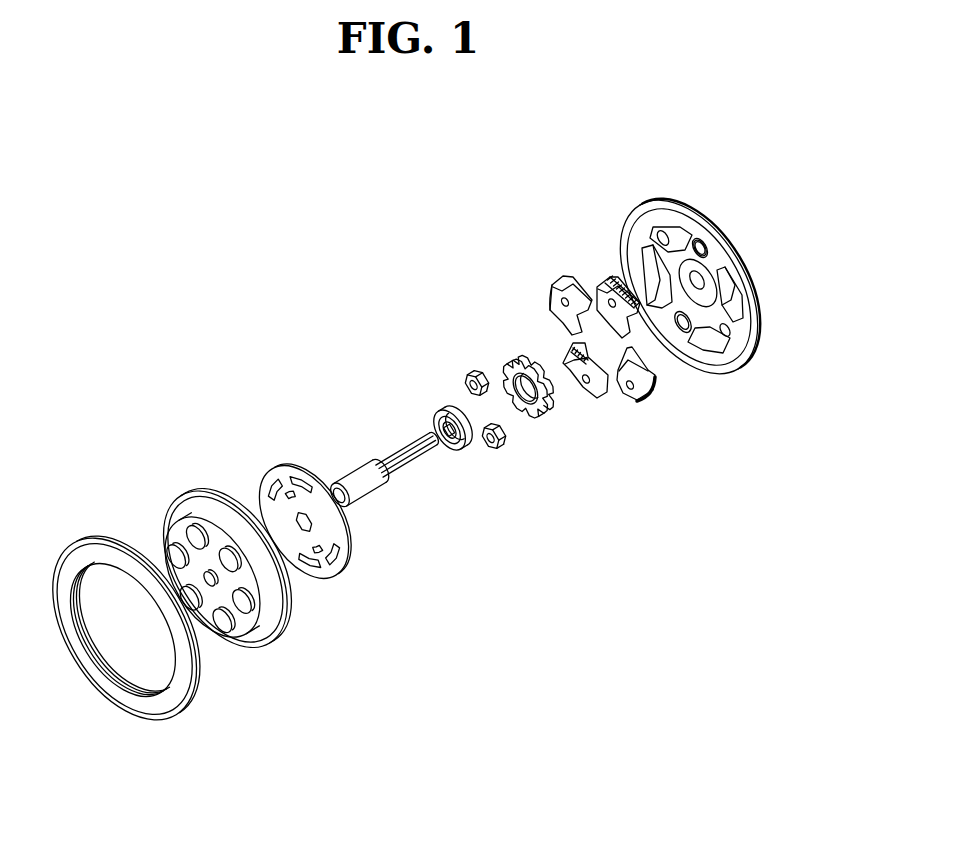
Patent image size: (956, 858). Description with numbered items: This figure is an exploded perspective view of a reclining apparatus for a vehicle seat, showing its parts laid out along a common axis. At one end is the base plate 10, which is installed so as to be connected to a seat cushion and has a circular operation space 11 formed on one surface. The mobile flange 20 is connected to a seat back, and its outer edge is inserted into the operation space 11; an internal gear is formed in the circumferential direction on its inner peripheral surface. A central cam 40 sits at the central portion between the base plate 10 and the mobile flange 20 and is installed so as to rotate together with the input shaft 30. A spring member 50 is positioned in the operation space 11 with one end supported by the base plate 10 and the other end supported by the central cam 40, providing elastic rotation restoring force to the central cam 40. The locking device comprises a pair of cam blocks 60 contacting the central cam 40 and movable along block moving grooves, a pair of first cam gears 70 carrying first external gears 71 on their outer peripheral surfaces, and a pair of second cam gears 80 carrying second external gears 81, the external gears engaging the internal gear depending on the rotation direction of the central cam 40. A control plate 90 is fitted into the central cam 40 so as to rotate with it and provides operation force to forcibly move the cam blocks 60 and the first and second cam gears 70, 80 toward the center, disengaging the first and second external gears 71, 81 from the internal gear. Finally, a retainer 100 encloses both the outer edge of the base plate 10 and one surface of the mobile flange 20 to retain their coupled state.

The base plate 10 is at (685, 219).
The operation space 11 is at (731, 350).
The mobile flange 20 is at (201, 491).
The input shaft 30 is at (392, 457).
The central cam 40 is at (521, 362).
The spring member 50 is at (447, 412).
The cam block 60 is at (470, 375).
The first cam gear 70 is at (551, 299).
The first external gear 71 is at (556, 297).
The second cam gear 80 is at (602, 289).
The second external gear 81 is at (615, 281).
The control plate 90 is at (282, 464).
The retainer 100 is at (96, 538).